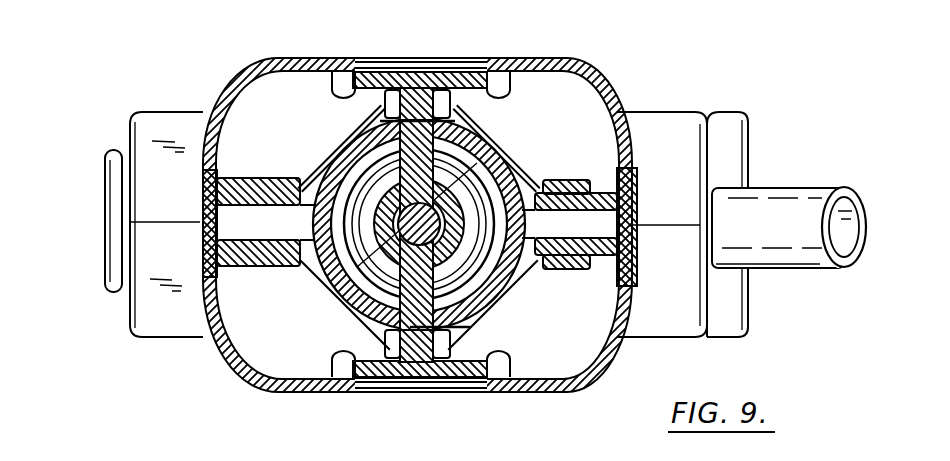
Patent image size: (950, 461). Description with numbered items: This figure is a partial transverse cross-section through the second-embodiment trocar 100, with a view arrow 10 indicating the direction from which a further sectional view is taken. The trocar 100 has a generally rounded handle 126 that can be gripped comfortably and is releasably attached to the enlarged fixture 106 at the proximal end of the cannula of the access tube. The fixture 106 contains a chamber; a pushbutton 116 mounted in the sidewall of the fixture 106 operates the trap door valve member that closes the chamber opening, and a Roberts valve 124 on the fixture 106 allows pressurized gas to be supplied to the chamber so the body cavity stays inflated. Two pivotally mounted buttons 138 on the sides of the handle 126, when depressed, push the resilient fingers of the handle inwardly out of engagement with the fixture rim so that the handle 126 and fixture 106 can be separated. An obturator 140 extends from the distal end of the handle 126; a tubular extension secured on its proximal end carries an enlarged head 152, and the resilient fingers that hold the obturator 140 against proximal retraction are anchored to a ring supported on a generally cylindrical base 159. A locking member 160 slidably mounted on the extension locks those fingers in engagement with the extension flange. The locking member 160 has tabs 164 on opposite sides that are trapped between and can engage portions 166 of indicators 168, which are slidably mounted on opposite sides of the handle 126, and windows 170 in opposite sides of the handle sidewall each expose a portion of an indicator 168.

The section view indicator 10 is at (420, 0).
The trocar 100 is at (619, 83).
The fixture 106 is at (749, 139).
The pushbutton 116 is at (107, 298).
The Roberts valve 124 is at (817, 256).
The handle 126 is at (252, 378).
The buttons 138 is at (200, 192).
The obturator 140 is at (331, 311).
The enlarged head 152 is at (501, 182).
The cylindrical base 159 is at (322, 290).
The locking member 160 is at (427, 156).
The tabs 164 is at (419, 88).
The portions of indicators 166 is at (380, 120).
The indicators 168 is at (456, 76).
The windows 170 is at (383, 57).